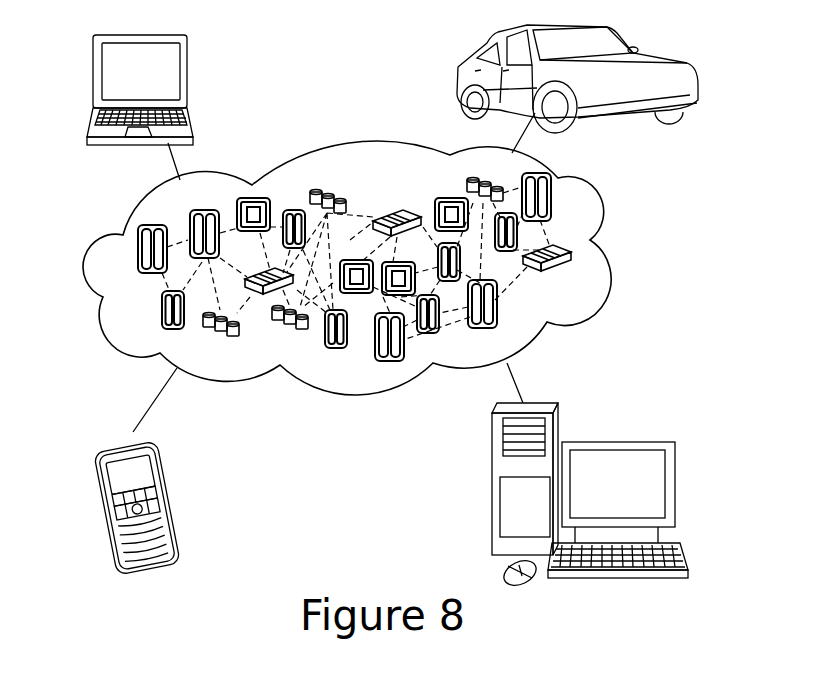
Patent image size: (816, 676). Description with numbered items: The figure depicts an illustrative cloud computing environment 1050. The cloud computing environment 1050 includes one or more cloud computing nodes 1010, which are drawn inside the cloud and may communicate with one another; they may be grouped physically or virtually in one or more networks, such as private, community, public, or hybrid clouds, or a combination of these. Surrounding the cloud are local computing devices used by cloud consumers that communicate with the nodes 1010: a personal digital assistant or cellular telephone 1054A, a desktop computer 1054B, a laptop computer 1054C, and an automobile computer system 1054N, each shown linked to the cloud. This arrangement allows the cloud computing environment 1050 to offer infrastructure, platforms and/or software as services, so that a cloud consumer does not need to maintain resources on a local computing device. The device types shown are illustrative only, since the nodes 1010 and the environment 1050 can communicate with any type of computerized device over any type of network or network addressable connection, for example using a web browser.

The cloud computing nodes 1010 is at (613, 262).
The cloud computing environment 1050 is at (600, 213).
The personal digital assistant (PDA) or cellular telephone 1054A is at (177, 500).
The desktop computer 1054B is at (652, 442).
The laptop computer 1054C is at (187, 72).
The automobile computer system 1054N is at (458, 80).